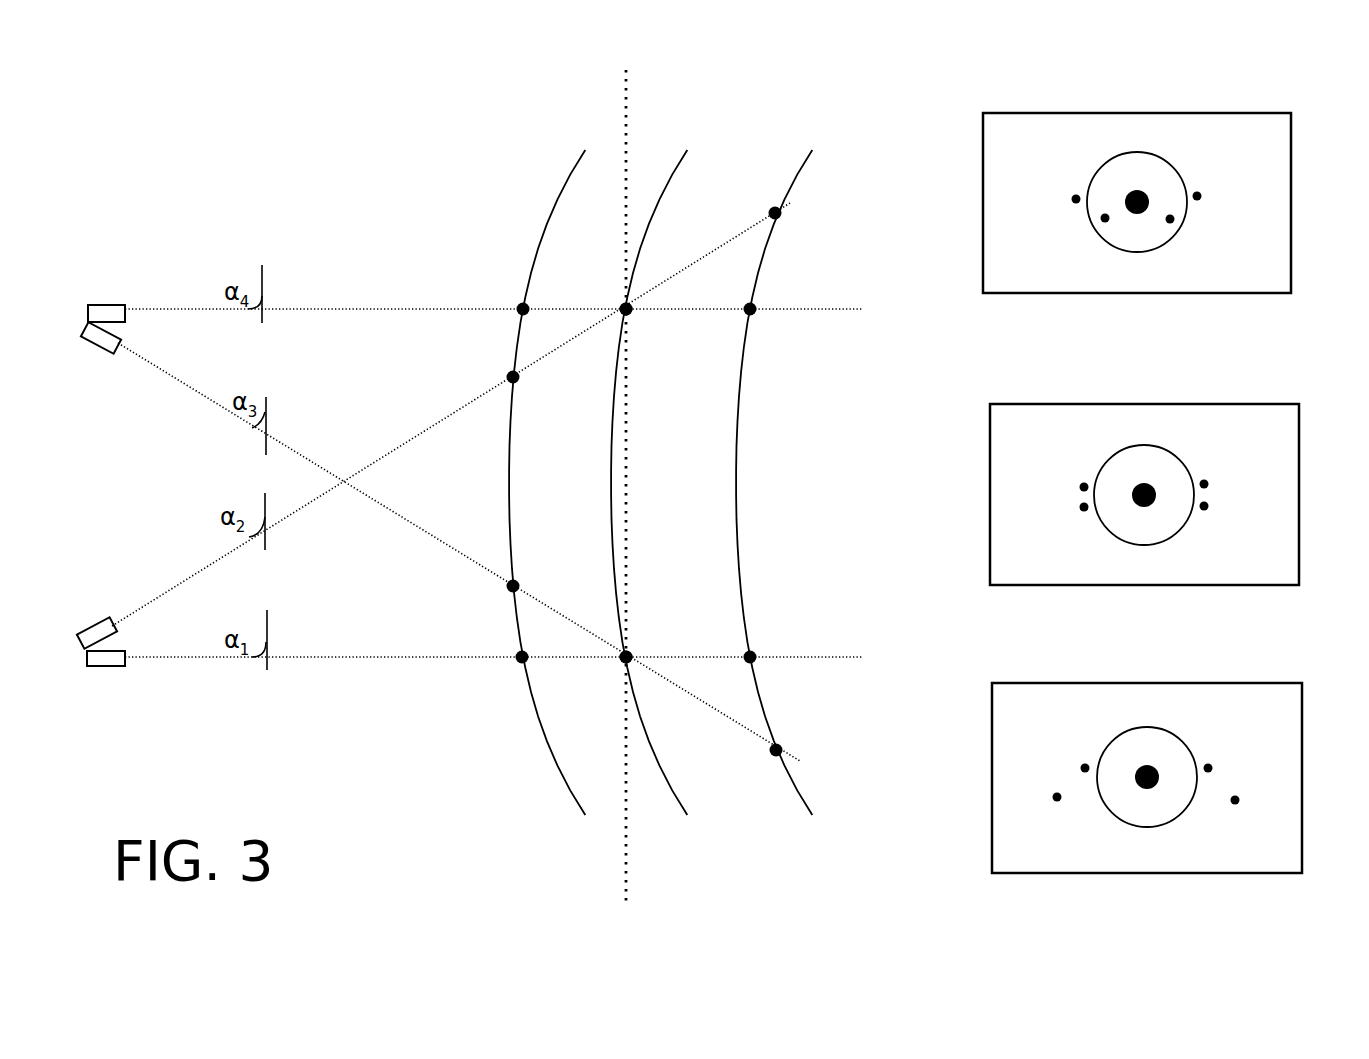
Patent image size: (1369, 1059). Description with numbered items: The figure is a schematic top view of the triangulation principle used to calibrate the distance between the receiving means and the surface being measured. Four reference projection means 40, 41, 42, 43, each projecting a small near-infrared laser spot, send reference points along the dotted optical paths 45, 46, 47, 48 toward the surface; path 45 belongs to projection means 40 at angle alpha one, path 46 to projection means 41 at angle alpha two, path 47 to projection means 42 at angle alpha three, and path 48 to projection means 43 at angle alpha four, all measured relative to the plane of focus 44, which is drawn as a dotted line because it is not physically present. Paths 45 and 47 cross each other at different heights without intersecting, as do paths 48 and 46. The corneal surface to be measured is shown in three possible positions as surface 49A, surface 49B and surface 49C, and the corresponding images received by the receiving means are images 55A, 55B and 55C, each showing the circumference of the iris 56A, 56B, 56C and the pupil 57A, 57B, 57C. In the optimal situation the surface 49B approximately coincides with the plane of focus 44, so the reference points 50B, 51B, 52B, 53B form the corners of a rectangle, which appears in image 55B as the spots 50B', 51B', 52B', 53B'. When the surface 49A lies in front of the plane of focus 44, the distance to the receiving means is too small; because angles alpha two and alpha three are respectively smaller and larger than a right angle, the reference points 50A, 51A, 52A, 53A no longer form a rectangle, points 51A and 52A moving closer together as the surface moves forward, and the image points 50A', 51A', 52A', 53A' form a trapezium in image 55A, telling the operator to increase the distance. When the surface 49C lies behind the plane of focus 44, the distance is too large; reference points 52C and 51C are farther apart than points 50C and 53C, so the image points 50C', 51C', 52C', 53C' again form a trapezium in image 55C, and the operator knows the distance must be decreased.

The reference projection means 40 is at (110, 665).
The reference projection means 41 is at (95, 628).
The reference projection means 42 is at (90, 343).
The reference projection means 43 is at (113, 303).
The plane of focus 44 is at (626, 89).
The optical path 45 is at (355, 658).
The optical path 46 is at (313, 500).
The optical path 47 is at (316, 467).
The optical path 48 is at (347, 309).
The surface to be measured 49A is at (577, 802).
The surface to be measured 49B is at (675, 800).
The surface to be measured 49C is at (808, 803).
The reference point 50A is at (490, 693).
The reference point 50B is at (660, 634).
The reference point 50C is at (800, 628).
The reference point 51A is at (470, 358).
The reference point 51B is at (669, 353).
The reference point 51C is at (830, 203).
The reference point 52A is at (475, 603).
The reference point 52B is at (665, 609).
The reference point 52C is at (825, 717).
The reference point 53A is at (496, 270).
The reference point 53B is at (669, 333).
The reference point 53C is at (810, 293).
The image 55A is at (1040, 113).
The image 55B is at (1047, 404).
The image 55C is at (1035, 683).
The circumference of an iris 56A is at (1150, 153).
The circumference of an iris 56B is at (1142, 448).
The circumference of an iris 56C is at (1150, 727).
The pupil 57A is at (1147, 193).
The pupil 57B is at (1153, 494).
The pupil 57C is at (1153, 775).
The image point 50A' is at (1276, 174).
The image point 51A' is at (1008, 225).
The image point 52A' is at (1266, 232).
The image point 53A' is at (987, 168).
The spot 50B' is at (1280, 451).
The spot 51B' is at (1004, 531).
The spot 52B' is at (1280, 541).
The spot 53B' is at (1004, 470).
The image point 50C' is at (1287, 744).
The image point 51C' is at (985, 816).
The image point 52C' is at (1300, 826).
The image point 53C' is at (1005, 740).